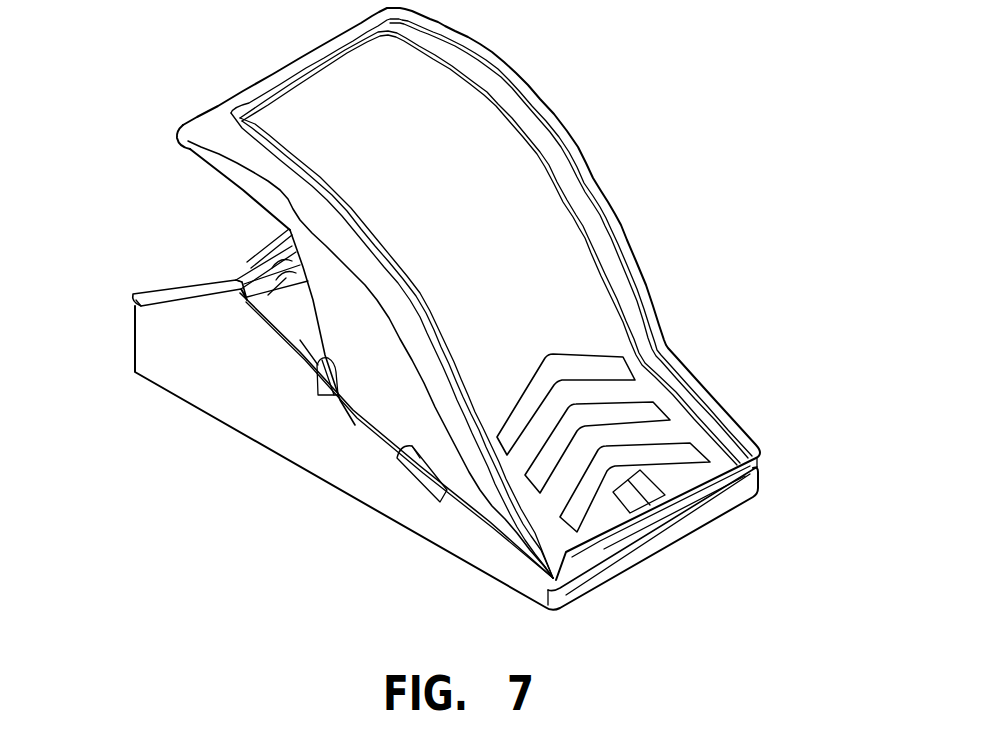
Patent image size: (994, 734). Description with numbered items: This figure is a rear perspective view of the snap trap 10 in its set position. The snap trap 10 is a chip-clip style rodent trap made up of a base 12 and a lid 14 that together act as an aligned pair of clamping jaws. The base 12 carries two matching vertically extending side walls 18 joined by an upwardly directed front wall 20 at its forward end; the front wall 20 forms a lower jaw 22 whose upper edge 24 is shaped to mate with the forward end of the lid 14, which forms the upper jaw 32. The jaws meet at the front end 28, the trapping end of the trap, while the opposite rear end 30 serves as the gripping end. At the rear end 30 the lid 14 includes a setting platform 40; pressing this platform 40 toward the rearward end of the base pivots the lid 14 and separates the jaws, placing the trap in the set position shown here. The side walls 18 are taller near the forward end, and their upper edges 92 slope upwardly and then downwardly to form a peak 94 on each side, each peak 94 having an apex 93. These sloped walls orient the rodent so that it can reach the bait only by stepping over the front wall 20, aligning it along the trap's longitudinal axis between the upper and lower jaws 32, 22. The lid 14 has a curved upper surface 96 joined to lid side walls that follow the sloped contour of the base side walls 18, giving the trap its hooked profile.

The snap trap 10 is at (645, 172).
The base 12 is at (452, 553).
The lid 14 is at (639, 268).
The side walls 18 is at (340, 463).
The front wall 20 is at (268, 254).
The lower jaw 22 is at (157, 295).
The upper edge 24 is at (207, 283).
The front end 28 is at (150, 93).
The rear end 30 is at (770, 462).
The upper jaw 32 is at (220, 91).
The setting platform 40 is at (678, 428).
The upper edges 92 is at (292, 368).
The apexes 93 is at (243, 287).
The peak 94 is at (238, 302).
The curved upper surface 96 is at (478, 219).